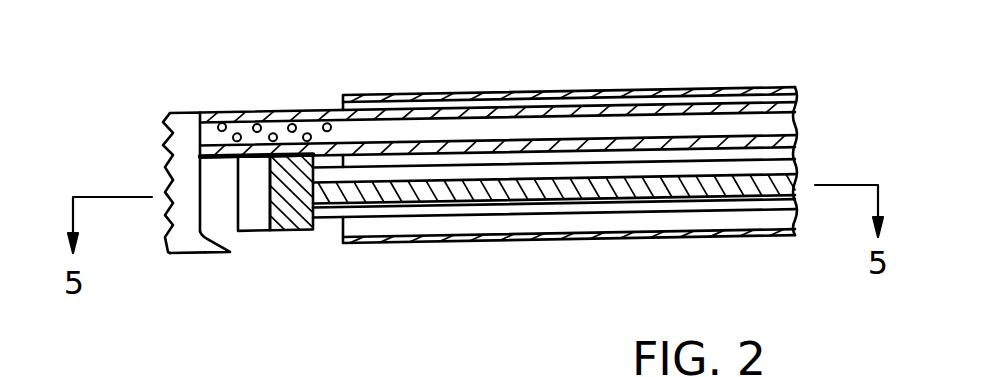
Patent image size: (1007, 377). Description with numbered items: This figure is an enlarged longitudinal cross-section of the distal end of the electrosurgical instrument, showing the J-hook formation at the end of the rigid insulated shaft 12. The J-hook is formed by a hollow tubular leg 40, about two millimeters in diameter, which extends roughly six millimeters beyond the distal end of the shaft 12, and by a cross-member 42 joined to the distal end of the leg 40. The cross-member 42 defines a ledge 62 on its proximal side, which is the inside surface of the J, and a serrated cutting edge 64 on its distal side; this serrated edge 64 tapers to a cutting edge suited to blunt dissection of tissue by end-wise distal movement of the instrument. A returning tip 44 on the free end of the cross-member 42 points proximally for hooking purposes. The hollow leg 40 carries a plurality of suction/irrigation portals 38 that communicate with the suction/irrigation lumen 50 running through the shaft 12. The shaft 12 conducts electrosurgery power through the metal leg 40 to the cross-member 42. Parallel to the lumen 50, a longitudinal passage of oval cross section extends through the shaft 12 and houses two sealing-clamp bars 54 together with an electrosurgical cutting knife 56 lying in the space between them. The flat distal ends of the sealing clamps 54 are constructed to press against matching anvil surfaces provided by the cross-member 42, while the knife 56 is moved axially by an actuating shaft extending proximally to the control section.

The shaft 12 is at (590, 240).
The suction/irrigation portals 38 is at (307, 133).
The hollow tubular leg 40 is at (247, 115).
The cross-member 42 is at (182, 202).
The returning tip 44 is at (212, 247).
The suction/irrigation lumen 50 is at (515, 128).
The sealing-clamp bars 54 is at (257, 215).
The electrosurgical cutting knife 56 is at (290, 215).
The ledge 62 is at (200, 171).
The serrated cutting edge 64 is at (165, 133).